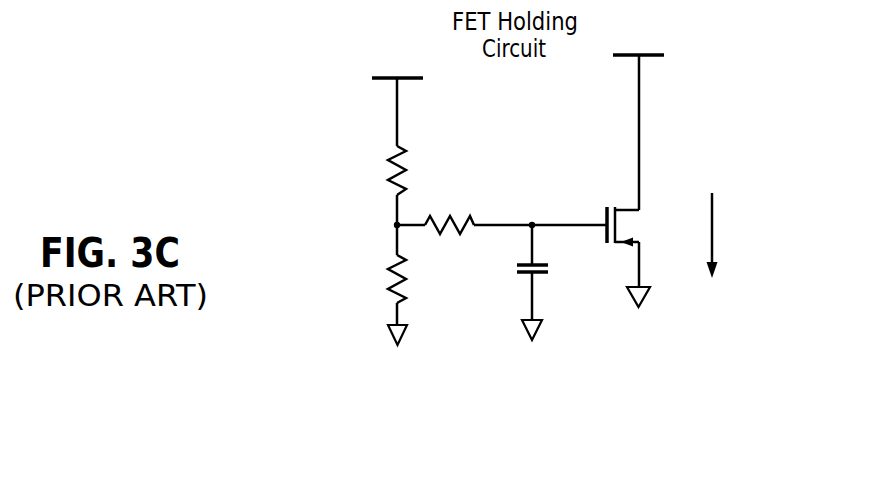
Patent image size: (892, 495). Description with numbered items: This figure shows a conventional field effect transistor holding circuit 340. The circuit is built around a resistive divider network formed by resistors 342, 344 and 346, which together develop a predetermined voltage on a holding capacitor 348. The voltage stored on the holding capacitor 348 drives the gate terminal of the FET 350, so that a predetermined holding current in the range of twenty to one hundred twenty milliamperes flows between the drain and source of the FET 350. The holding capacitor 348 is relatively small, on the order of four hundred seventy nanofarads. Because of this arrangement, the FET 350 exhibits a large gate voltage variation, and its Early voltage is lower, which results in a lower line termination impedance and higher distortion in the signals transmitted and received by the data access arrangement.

The field effect transistor holding circuit 340 is at (323, 57).
The resistor 342 is at (408, 162).
The resistor 344 is at (463, 220).
The resistor 346 is at (404, 283).
The holding capacitor 348 is at (541, 263).
The FET 350 is at (620, 222).